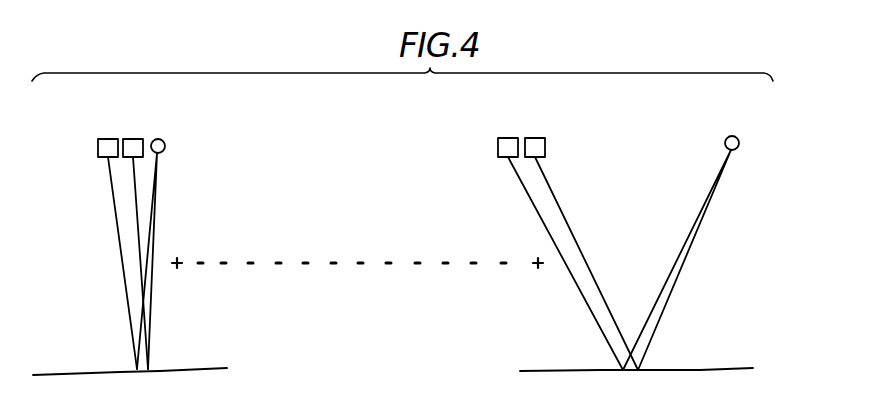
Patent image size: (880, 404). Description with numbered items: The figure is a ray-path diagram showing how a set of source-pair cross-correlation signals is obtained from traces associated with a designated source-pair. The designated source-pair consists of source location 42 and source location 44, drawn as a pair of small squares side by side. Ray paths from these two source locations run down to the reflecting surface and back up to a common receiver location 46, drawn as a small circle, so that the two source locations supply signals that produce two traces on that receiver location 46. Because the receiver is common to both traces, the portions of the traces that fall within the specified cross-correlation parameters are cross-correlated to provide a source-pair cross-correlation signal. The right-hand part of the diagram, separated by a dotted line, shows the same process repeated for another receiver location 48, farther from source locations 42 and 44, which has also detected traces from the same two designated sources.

The source location 42 is at (95, 138).
The source location 44 is at (146, 134).
The receiver location 46 is at (168, 137).
The receiver location 48 is at (745, 133).